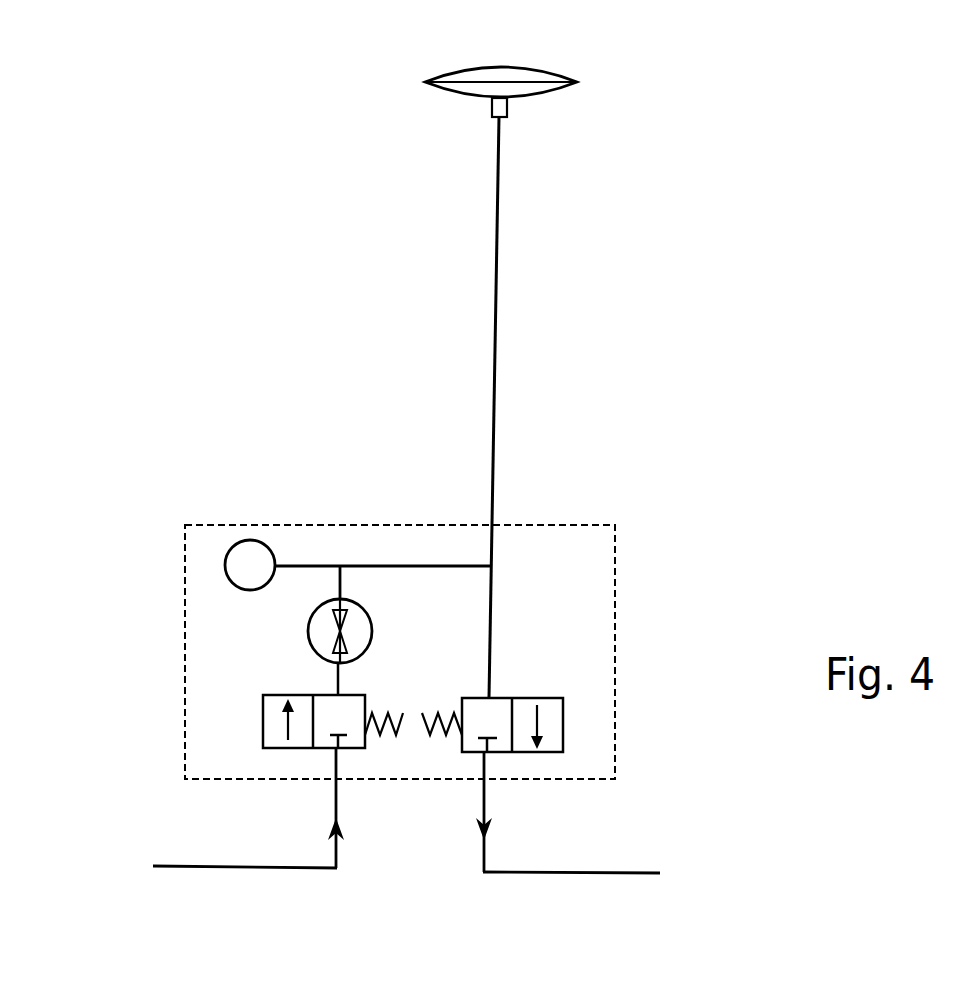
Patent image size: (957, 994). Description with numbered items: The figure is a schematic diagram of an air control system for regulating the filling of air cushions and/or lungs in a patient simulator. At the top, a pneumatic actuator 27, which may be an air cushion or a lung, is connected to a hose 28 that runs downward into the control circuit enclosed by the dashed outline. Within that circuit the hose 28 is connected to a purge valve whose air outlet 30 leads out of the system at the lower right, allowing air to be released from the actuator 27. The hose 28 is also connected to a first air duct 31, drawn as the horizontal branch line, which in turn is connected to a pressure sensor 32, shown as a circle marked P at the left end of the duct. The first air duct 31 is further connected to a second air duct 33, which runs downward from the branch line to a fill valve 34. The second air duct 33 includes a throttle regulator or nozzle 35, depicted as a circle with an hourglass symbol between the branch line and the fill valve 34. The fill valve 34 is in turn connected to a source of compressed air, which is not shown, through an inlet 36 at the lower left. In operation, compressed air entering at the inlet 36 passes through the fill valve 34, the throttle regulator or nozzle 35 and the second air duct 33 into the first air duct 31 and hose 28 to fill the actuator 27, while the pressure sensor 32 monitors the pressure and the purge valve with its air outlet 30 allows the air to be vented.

The pneumatic actuator 27 is at (520, 90).
The hose 28 is at (496, 322).
The air outlet 30 is at (486, 850).
The first air duct 31 is at (392, 566).
The pressure sensor 32 is at (255, 548).
The second air duct 33 is at (343, 585).
The fill valve 34 is at (273, 695).
The throttle regulator or nozzle 35 is at (315, 630).
The inlet 36 is at (335, 855).